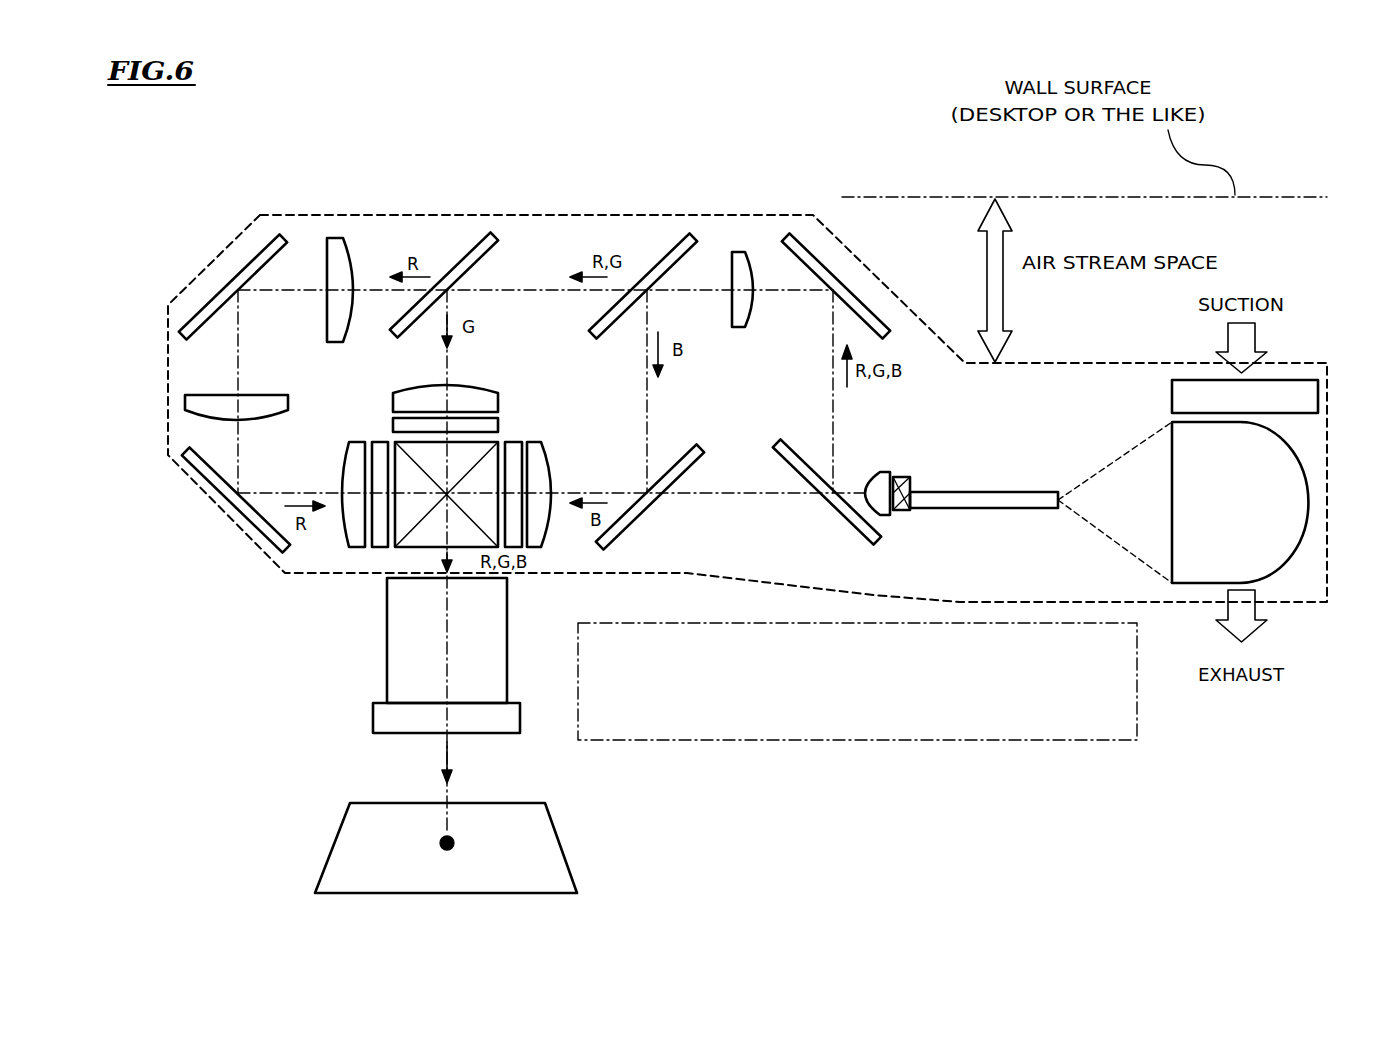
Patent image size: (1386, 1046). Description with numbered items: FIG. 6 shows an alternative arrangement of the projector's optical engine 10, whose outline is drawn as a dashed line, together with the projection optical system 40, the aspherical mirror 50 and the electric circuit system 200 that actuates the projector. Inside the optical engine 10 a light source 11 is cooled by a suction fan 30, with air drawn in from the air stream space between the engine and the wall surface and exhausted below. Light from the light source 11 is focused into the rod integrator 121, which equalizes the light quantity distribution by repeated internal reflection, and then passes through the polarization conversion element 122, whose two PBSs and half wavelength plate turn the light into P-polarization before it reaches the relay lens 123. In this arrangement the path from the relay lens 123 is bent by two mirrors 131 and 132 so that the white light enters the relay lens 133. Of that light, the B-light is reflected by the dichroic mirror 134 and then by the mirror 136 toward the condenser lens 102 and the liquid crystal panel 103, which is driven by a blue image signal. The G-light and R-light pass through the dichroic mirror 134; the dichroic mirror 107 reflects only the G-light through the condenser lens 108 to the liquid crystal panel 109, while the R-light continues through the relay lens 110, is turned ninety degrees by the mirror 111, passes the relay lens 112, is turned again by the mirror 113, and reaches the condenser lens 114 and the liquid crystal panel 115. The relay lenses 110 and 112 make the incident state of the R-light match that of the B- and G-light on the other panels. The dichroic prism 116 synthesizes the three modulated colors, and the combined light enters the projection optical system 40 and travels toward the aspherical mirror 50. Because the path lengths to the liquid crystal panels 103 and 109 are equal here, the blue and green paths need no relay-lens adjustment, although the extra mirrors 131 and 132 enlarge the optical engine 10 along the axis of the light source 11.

The optical engine 10 is at (1308, 360).
The light source 11 is at (1298, 490).
The suction fan 30 is at (1188, 378).
The projection optical system 40 is at (398, 650).
The aspherical mirror 50 is at (347, 852).
The condenser lens 102 is at (547, 470).
The liquid crystal panel 103 is at (514, 440).
The dichroic mirror 107 is at (497, 240).
The condenser lens 108 is at (425, 393).
The liquid crystal panel 109 is at (393, 422).
The relay lens 110 is at (345, 270).
The mirror 111 is at (247, 270).
The relay lens 112 is at (255, 398).
The mirror 113 is at (218, 505).
The condenser lens 114 is at (350, 465).
The liquid crystal panel 115 is at (376, 444).
The dichroic prism 116 is at (407, 542).
The rod integrator 121 is at (980, 492).
The polarization conversion element 122 is at (905, 513).
The relay lens 123 is at (880, 472).
The mirror 131 is at (833, 500).
The mirror 132 is at (845, 290).
The relay lens 133 is at (750, 253).
The dichroic mirror 134 is at (690, 238).
The mirror 136 is at (645, 500).
The electric circuit system 200 is at (862, 743).